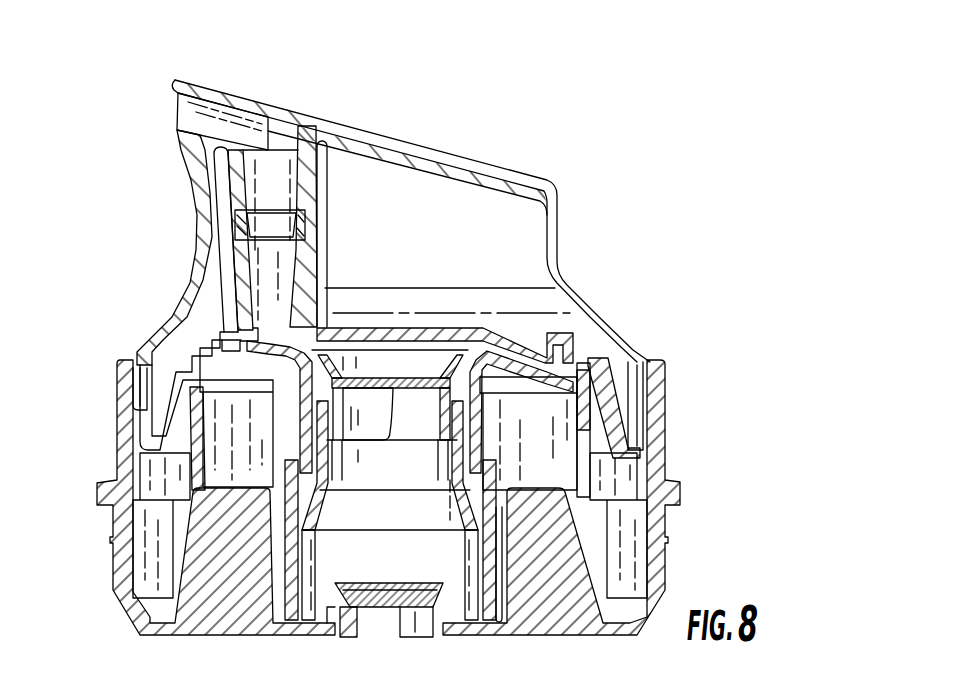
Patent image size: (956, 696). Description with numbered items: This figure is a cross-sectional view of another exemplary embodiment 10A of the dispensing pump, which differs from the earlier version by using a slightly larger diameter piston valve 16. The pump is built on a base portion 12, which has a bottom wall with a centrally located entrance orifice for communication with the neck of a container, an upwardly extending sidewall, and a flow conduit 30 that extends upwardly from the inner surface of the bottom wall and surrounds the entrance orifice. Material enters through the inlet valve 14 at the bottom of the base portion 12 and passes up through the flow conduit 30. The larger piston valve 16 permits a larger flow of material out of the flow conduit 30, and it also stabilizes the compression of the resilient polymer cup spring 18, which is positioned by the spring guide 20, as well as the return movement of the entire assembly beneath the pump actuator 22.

The exemplary embodiment 10A is at (390, 355).
The base portion 12 is at (112, 546).
The inlet valve 14 is at (401, 603).
The piston valve 16 is at (352, 474).
The resilient polymer cup spring 18 is at (527, 437).
The spring guide 20 is at (177, 378).
The pump actuator 22 is at (460, 172).
The flow conduit 30 is at (487, 551).